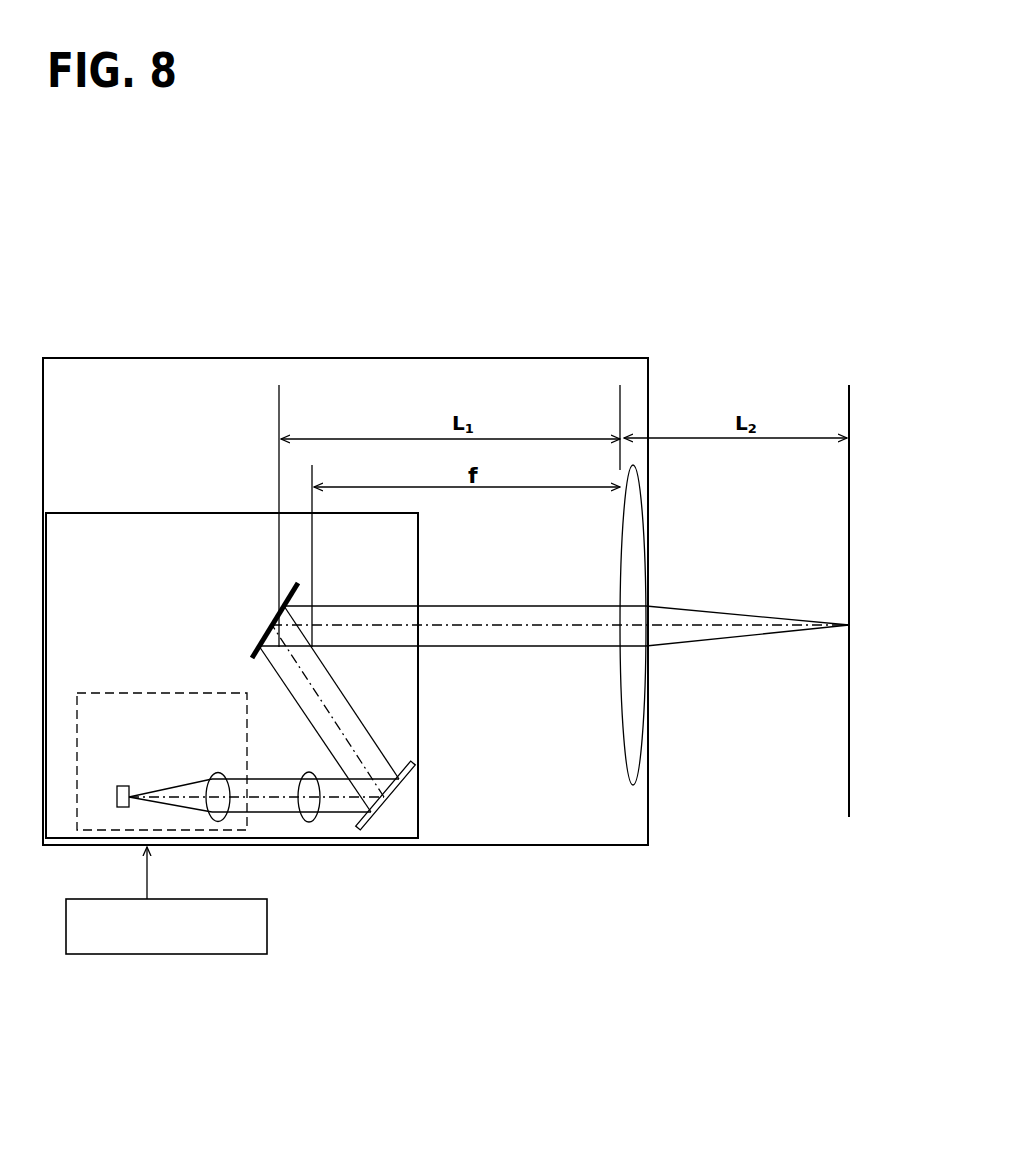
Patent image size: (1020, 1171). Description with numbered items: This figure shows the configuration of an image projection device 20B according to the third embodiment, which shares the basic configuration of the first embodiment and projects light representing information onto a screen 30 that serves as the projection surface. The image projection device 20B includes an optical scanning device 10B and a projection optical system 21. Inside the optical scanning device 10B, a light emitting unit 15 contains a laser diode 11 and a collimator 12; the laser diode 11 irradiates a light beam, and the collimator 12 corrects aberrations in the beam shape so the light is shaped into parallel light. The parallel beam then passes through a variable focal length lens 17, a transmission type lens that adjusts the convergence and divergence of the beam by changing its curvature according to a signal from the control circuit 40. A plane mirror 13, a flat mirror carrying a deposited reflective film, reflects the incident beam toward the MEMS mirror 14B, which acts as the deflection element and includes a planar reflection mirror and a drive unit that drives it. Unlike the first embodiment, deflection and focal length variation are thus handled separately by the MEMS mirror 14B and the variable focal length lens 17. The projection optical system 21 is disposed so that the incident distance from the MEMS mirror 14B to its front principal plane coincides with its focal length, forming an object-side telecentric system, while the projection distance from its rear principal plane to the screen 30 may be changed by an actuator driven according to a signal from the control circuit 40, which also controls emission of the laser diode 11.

The image projection device 20B is at (420, 358).
The optical scanning device 10B is at (163, 513).
The light emitting unit 15 is at (118, 693).
The laser diode 11 is at (127, 786).
The collimator 12 is at (217, 773).
The variable focal length lens 17 is at (305, 773).
The plane mirror 13 is at (395, 789).
The MEMS mirror 14B is at (275, 624).
The projection optical system 21 is at (649, 485).
The screen 30 is at (851, 413).
The control circuit 40 is at (240, 899).